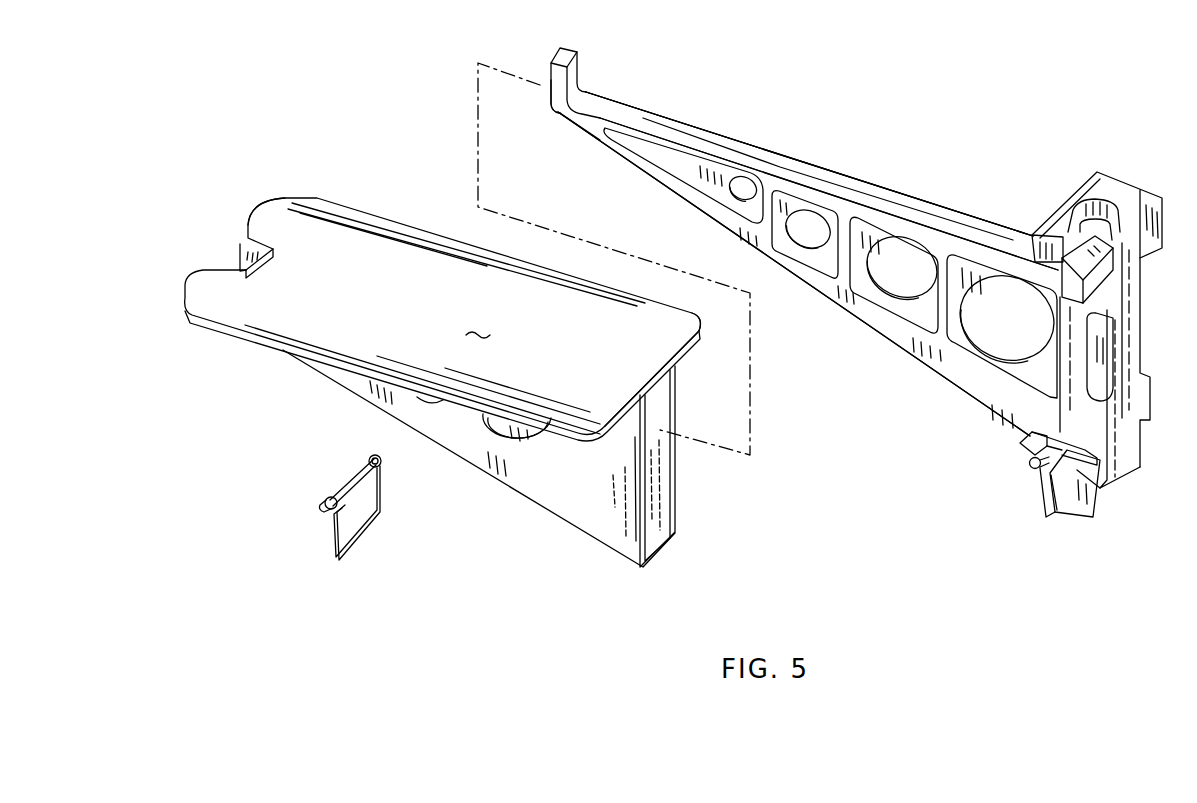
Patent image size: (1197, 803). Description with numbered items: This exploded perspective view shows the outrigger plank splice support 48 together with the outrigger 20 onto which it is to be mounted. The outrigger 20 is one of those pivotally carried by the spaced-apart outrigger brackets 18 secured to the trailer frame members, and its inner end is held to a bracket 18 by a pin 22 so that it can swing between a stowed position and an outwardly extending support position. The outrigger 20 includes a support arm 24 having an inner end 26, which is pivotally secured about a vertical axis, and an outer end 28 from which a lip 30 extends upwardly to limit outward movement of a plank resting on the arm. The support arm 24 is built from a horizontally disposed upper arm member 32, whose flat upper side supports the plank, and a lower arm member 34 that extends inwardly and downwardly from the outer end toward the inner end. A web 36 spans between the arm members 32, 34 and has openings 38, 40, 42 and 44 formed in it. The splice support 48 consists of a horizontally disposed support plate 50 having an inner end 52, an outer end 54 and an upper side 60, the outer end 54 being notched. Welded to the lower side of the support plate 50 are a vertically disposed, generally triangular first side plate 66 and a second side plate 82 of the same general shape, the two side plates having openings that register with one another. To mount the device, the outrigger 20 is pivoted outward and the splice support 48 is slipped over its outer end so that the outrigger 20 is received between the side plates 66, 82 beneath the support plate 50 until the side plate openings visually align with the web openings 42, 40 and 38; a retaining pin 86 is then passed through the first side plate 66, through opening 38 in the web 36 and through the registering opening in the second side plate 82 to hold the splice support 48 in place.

The outrigger bracket 18 is at (1141, 315).
The outrigger 20 is at (975, 196).
The pin 22 is at (1029, 466).
The support arm 24 is at (902, 198).
The inner end 26 is at (1020, 428).
The outer end 28 is at (548, 115).
The lip 30 is at (572, 72).
The upper arm member 32 is at (765, 151).
The lower arm member 34 is at (893, 324).
The web 36 is at (687, 163).
The opening 38 is at (736, 191).
The opening 40 is at (798, 233).
The opening 42 is at (846, 294).
The opening 44 is at (1000, 338).
The outrigger plank splice support 48 is at (414, 219).
The support plate 50 is at (355, 233).
The inner end 52 is at (687, 360).
The outer end 54 is at (262, 215).
The upper side 60 is at (477, 324).
The first side plate 66 is at (662, 485).
The second side plate 82 is at (600, 521).
The retaining pin 86 is at (343, 473).